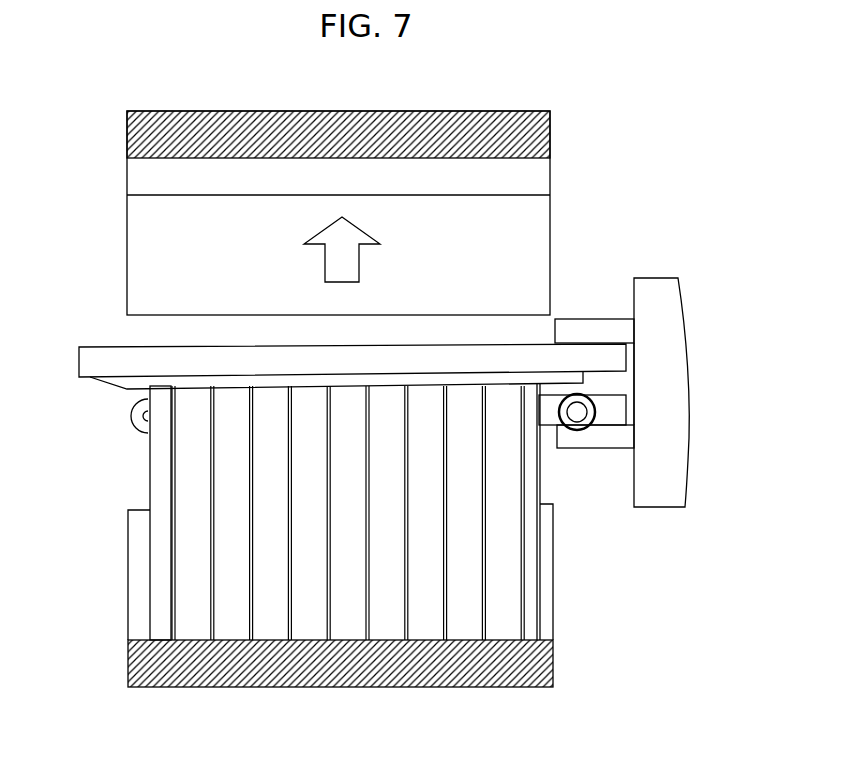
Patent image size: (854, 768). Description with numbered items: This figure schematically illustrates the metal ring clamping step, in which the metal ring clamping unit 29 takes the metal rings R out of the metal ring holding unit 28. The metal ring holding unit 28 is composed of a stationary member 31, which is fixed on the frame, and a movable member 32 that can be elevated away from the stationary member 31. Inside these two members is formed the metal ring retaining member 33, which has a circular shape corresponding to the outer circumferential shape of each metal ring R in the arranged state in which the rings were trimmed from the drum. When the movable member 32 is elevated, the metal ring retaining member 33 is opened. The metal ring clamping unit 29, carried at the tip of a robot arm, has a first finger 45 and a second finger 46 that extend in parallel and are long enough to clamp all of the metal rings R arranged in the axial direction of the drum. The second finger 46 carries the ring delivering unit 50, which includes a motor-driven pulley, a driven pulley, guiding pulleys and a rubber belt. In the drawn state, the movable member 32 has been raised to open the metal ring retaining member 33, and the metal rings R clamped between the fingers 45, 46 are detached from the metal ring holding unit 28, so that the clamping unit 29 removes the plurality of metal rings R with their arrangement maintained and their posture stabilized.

The metal ring holding unit 28 is at (578, 102).
The metal ring clamping unit 29 is at (652, 253).
The stationary member 31 is at (266, 688).
The movable member 32 is at (228, 111).
The metal ring retaining member 33 is at (165, 264).
The first finger 45 is at (574, 353).
The second finger 46 is at (545, 418).
The ring delivering unit 50 is at (602, 411).
The metal ring R is at (467, 597).